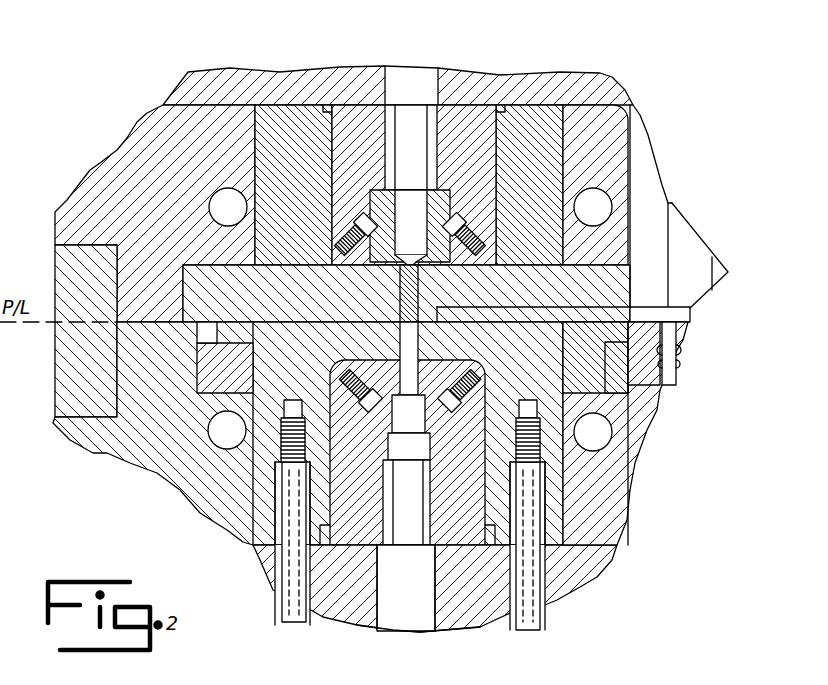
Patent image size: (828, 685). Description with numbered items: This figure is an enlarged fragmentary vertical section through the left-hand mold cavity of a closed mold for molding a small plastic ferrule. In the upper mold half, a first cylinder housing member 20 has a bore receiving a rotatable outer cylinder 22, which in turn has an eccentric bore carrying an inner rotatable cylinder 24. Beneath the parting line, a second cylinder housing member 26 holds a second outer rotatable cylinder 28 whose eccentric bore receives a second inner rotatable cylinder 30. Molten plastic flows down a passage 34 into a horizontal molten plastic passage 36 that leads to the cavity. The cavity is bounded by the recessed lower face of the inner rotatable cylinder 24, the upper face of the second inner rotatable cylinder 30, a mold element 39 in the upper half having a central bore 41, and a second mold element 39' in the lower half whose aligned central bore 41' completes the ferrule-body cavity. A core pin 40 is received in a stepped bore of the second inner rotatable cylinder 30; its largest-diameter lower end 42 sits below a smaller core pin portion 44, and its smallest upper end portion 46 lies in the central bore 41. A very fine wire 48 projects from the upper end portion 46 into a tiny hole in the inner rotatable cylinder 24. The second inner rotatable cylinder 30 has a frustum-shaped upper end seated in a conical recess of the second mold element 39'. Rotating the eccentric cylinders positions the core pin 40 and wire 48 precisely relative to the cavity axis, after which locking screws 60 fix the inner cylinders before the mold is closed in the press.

The first cylinder housing member 20 is at (287, 146).
The outer cylinder 22 is at (457, 128).
The inner rotatable cylinder 24 is at (440, 198).
The second cylinder housing member 26 is at (328, 522).
The second outer rotatable cylinder 28 is at (455, 525).
The second inner rotatable cylinder 30 is at (440, 364).
The passage 34 is at (690, 248).
The horizontal molten plastic passage 36 is at (556, 314).
The mold element 39 is at (395, 272).
The second mold element 39' is at (308, 433).
The core pin 40 is at (381, 426).
The central bore 41 is at (531, 288).
The central bore 41' is at (473, 311).
The lower end of the core pin 42 is at (412, 432).
The core pin portion 44 is at (400, 355).
The upper end portion 46 is at (420, 284).
The wire 48 is at (402, 270).
The locking screws 60 is at (345, 212).